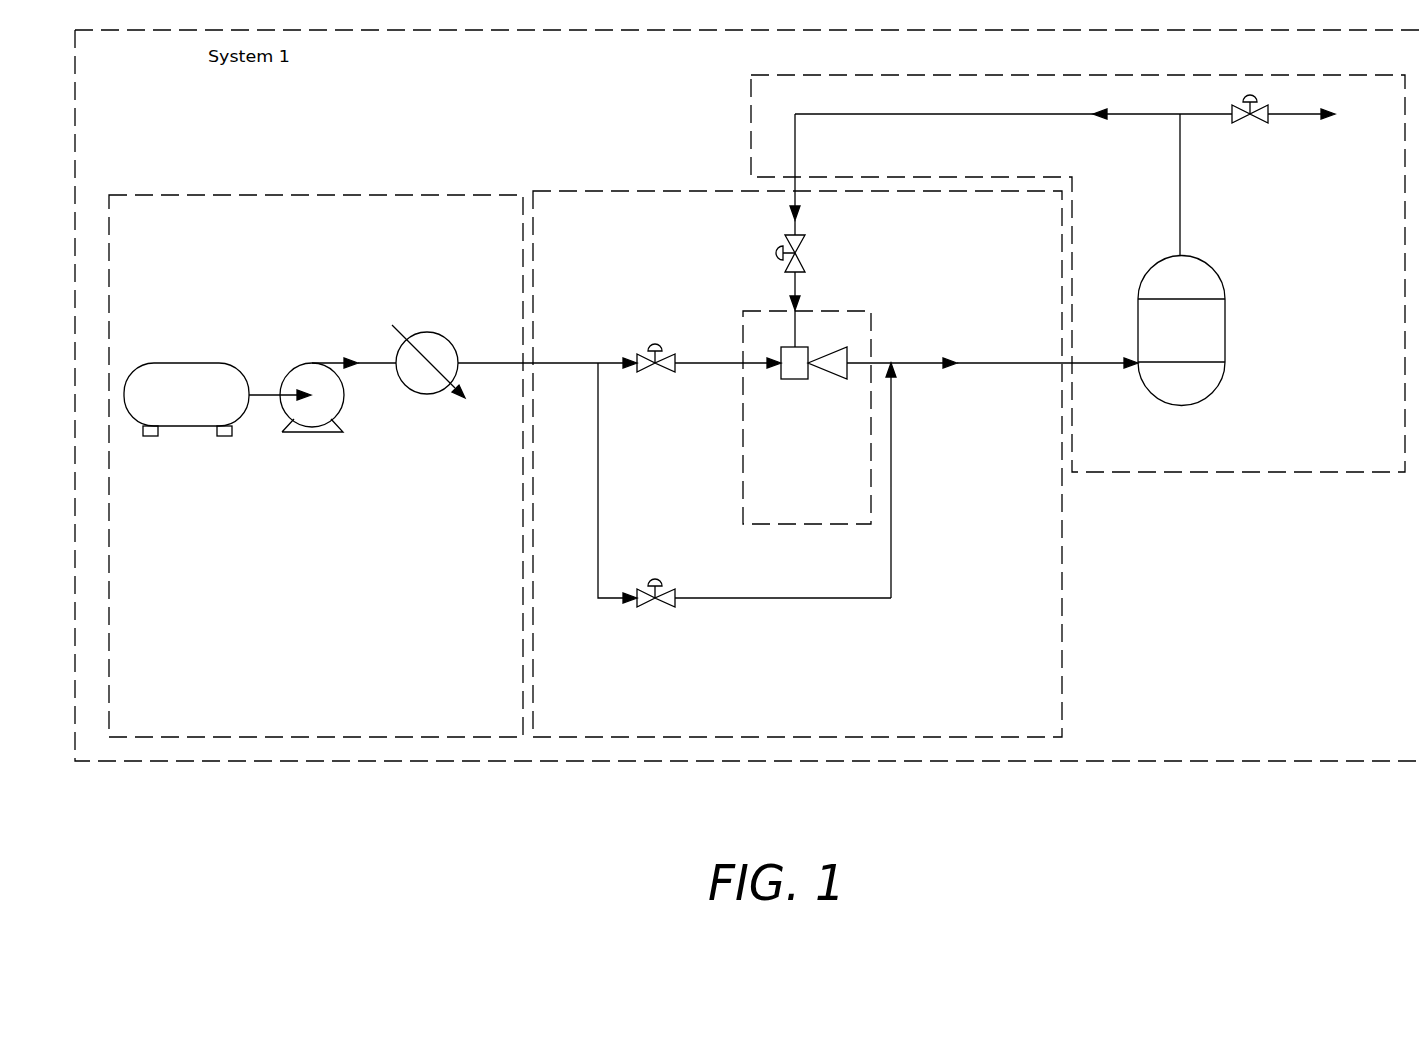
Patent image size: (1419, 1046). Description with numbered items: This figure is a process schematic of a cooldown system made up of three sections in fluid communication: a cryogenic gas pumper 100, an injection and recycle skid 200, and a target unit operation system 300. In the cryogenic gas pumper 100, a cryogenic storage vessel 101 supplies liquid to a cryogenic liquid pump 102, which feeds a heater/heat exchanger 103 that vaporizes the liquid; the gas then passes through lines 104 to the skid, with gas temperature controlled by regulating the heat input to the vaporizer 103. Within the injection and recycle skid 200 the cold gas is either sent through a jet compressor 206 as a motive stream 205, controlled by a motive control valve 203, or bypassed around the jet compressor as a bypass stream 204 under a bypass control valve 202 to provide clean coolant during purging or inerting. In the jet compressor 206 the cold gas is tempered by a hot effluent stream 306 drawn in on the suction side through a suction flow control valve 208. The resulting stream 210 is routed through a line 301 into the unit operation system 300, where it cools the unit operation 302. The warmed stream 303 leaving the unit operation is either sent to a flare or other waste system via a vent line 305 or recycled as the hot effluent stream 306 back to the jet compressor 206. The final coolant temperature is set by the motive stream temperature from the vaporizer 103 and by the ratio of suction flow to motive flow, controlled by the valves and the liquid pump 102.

The cryogenic gas pumper 100 is at (442, 232).
The cryogenic storage vessel 101 is at (188, 378).
The pump 102 is at (298, 375).
The heater/heat exchanger 103 is at (427, 340).
The lines 104 is at (490, 360).
The injection and recycle skid 200 is at (980, 722).
The bypass control valve 202 is at (665, 588).
The motive control valve 203 is at (645, 345).
The bypass stream 204 is at (775, 597).
The motive stream 205 is at (710, 360).
The jet compressor 206 is at (824, 481).
The suction side flow control valve 208 is at (787, 262).
The stream 210 is at (910, 360).
The unit operation system 300 is at (1315, 462).
The line 301 is at (1098, 360).
The unit operation 302 is at (1199, 334).
The warmed stream 303 is at (1178, 232).
The vent line 305 is at (1308, 120).
The hot effluent stream 306 is at (1133, 120).